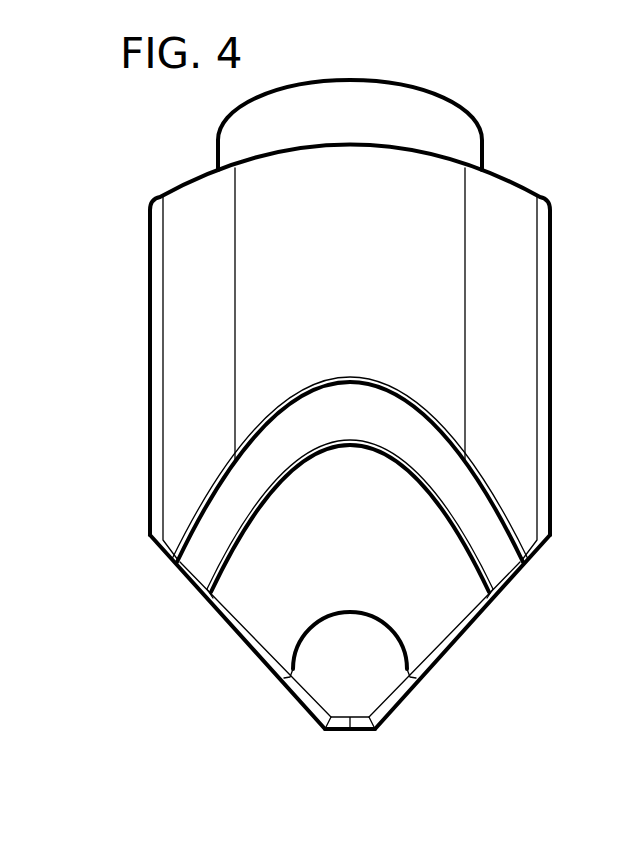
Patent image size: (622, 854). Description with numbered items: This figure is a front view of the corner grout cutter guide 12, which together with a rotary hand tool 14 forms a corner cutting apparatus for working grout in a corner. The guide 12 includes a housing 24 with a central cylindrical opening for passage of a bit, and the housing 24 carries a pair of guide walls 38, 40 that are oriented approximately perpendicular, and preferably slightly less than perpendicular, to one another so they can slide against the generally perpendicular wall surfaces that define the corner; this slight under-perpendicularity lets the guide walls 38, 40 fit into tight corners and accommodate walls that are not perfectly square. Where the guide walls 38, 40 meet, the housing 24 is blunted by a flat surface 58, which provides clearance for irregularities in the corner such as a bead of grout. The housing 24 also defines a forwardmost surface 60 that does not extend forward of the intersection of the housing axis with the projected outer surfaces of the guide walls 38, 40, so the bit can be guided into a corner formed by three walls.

The corner cutting guide 12 is at (128, 407).
The rotary hand tool 14 is at (176, 516).
The housing 24 is at (490, 388).
The guide wall 38 is at (423, 683).
The guide wall 40 is at (258, 664).
The flat surface 58 is at (342, 733).
The forwardmost surface 60 is at (338, 487).